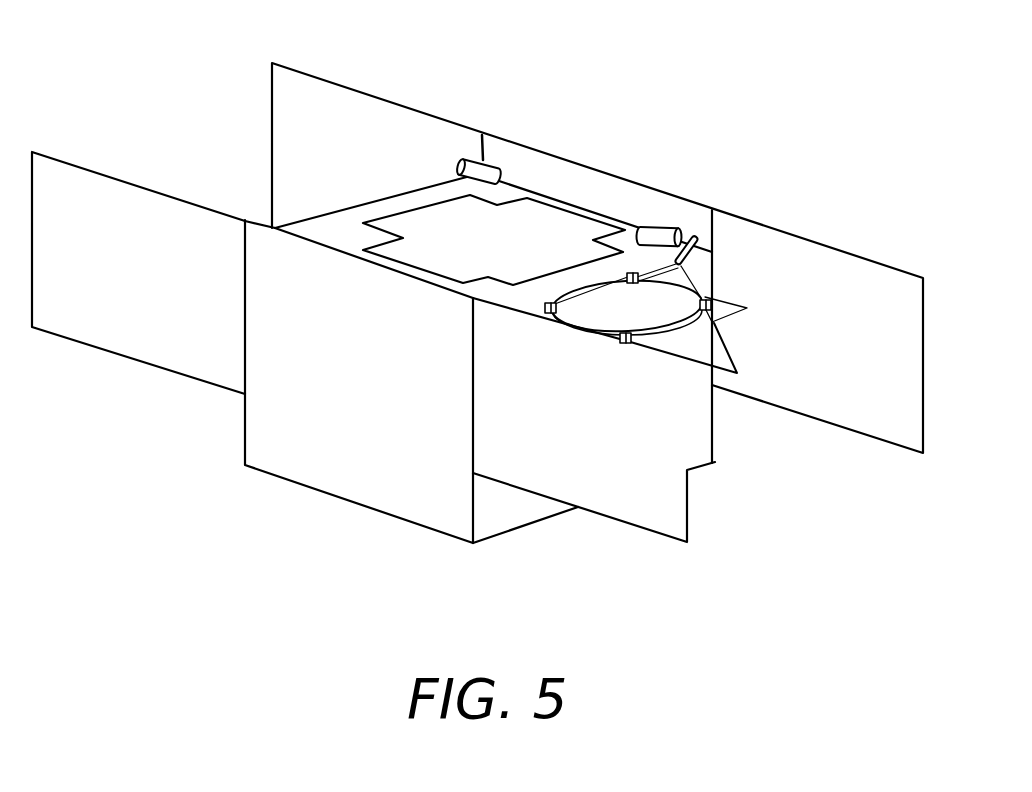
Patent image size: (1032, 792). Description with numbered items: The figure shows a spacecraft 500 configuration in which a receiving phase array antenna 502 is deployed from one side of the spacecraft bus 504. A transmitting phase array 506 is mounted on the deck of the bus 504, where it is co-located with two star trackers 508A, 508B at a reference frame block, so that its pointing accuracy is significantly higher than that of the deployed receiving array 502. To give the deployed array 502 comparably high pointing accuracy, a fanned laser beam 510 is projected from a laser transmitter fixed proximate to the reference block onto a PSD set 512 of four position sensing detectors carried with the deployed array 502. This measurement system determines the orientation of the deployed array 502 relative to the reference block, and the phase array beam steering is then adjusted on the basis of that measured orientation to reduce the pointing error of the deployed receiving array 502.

The spacecraft 500 is at (746, 93).
The receiving phase array antenna 502 is at (708, 299).
The spacecraft bus 504 is at (507, 515).
The transmitting phase array 506 is at (560, 220).
The star tracker 508A is at (485, 166).
The star tracker 508B is at (658, 231).
The fanned laser beam 510 is at (677, 349).
The PSD set 512 is at (619, 348).